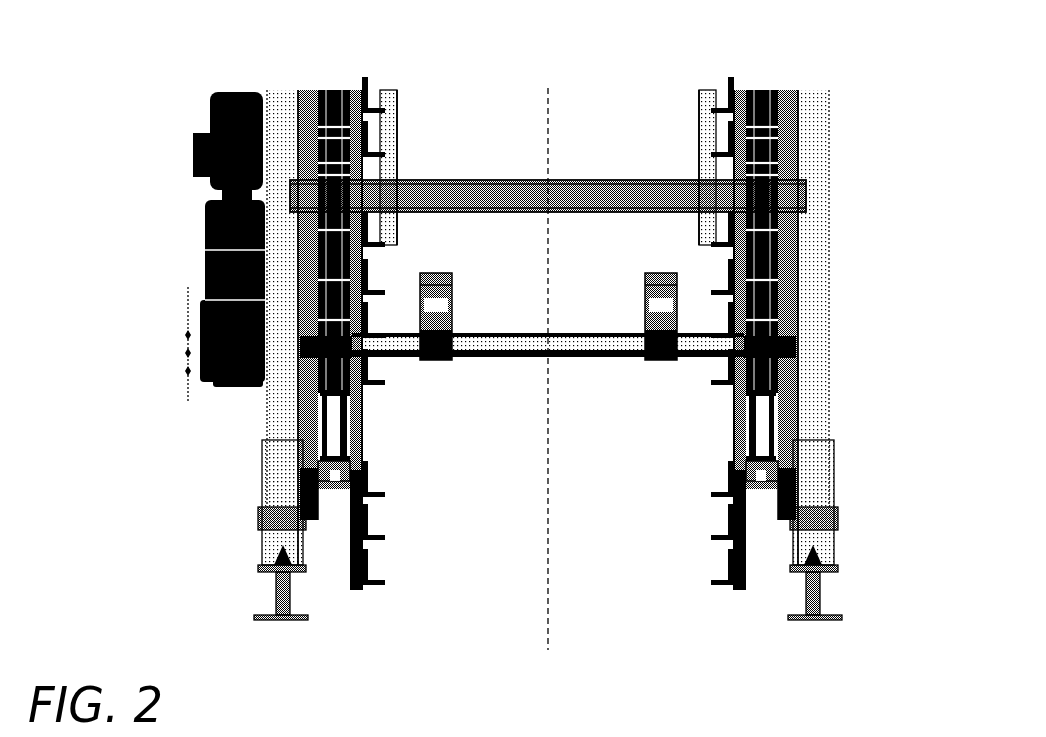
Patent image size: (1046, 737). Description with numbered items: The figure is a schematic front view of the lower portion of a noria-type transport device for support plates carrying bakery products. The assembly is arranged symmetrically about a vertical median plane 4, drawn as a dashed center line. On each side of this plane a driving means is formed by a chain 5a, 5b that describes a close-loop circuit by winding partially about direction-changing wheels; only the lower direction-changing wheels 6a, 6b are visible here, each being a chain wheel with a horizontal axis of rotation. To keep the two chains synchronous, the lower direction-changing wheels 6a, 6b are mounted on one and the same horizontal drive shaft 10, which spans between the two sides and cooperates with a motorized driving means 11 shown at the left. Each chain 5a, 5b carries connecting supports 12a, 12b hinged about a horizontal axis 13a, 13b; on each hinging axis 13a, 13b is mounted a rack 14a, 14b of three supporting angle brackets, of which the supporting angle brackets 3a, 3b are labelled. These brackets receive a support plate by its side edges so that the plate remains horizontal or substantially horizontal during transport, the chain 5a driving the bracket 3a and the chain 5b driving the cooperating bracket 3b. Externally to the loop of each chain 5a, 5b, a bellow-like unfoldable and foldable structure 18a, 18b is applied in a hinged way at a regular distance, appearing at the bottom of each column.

The vertical median plane 4 is at (548, 87).
The horizontal drive shaft 10 is at (560, 347).
The motorized driving means 11 is at (188, 240).
The supporting angle bracket 3a is at (723, 592).
The supporting angle bracket 3b is at (373, 592).
The chain 5a is at (747, 420).
The chain 5b is at (349, 420).
The lower direction-changing wheel 6a is at (778, 345).
The lower direction-changing wheel 6b is at (320, 347).
The connecting support 12a is at (741, 457).
The connecting support 12b is at (356, 458).
The hinging axis 13a is at (763, 486).
The hinging axis 13b is at (320, 486).
The rack 14a is at (700, 540).
The rack 14b is at (396, 540).
The bellow-like unfoldable and foldable structure 18a is at (776, 443).
The bellow-like unfoldable and foldable structure 18b is at (322, 443).